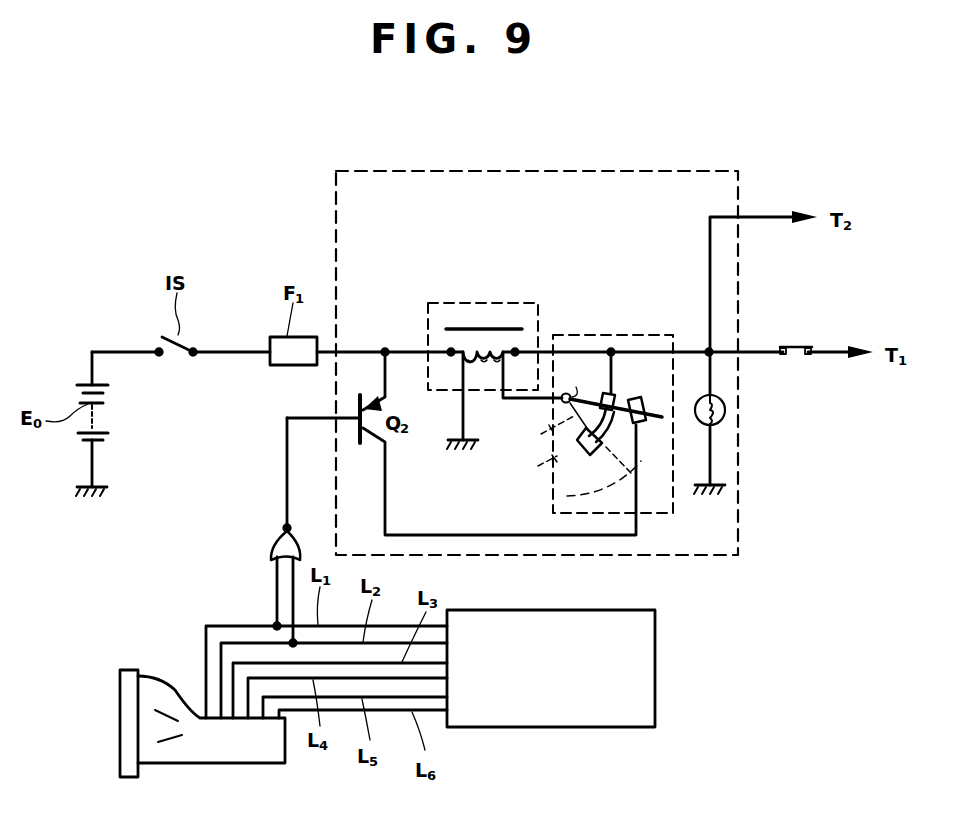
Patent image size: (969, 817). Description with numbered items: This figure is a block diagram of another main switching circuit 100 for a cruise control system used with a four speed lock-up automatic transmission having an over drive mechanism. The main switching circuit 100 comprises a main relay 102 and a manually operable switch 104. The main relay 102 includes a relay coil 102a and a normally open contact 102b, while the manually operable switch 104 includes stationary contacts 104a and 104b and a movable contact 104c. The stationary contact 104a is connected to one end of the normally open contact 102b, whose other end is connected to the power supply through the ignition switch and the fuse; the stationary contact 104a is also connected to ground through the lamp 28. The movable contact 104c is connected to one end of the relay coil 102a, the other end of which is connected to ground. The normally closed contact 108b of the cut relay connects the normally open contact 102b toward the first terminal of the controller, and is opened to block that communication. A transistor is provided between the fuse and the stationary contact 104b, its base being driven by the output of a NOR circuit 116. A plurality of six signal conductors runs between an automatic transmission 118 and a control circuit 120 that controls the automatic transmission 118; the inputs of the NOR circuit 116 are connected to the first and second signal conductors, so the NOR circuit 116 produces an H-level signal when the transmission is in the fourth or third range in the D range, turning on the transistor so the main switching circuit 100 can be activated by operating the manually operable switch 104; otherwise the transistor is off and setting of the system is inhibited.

The main switching circuit 100 is at (470, 171).
The main relay 102 is at (502, 339).
The relay coil 102a is at (478, 390).
The normally open contact 102b is at (501, 328).
The manually operable switch 104 is at (662, 404).
The stationary contact 104a is at (605, 394).
The stationary contact 104b is at (642, 402).
The movable contact 104c is at (642, 424).
The normally closed contact 108b is at (799, 355).
The lamp 28 is at (724, 416).
The NOR circuit 116 is at (282, 540).
The automatic transmission 118 is at (120, 711).
The control circuit 120 is at (656, 670).